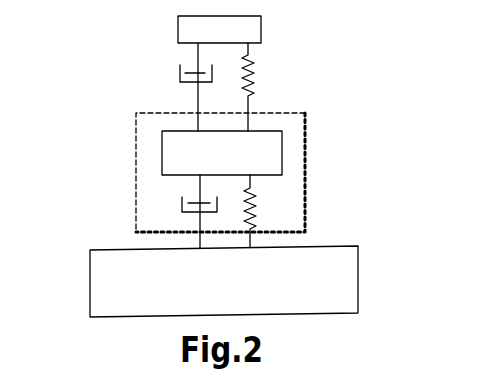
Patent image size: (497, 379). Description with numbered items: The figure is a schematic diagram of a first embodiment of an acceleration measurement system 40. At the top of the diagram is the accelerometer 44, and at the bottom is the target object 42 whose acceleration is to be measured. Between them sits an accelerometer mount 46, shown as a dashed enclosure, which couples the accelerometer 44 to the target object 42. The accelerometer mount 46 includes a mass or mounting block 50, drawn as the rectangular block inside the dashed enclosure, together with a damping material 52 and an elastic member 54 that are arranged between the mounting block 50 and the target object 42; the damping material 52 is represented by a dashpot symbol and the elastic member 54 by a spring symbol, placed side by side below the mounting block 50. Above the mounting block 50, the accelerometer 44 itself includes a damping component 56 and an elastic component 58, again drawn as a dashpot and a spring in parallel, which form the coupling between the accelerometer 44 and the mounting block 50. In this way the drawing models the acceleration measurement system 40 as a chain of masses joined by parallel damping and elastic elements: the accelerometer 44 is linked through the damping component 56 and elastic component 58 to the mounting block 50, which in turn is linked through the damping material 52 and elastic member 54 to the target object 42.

The acceleration measurement system 40 is at (112, 64).
The target object 42 is at (345, 246).
The accelerometer 44 is at (262, 21).
The accelerometer mount 46 is at (292, 110).
The mounting block 50 is at (282, 152).
The damping material 52 is at (181, 203).
The elastic member 54 is at (254, 192).
The damping component 56 is at (178, 76).
The elastic component 58 is at (253, 79).